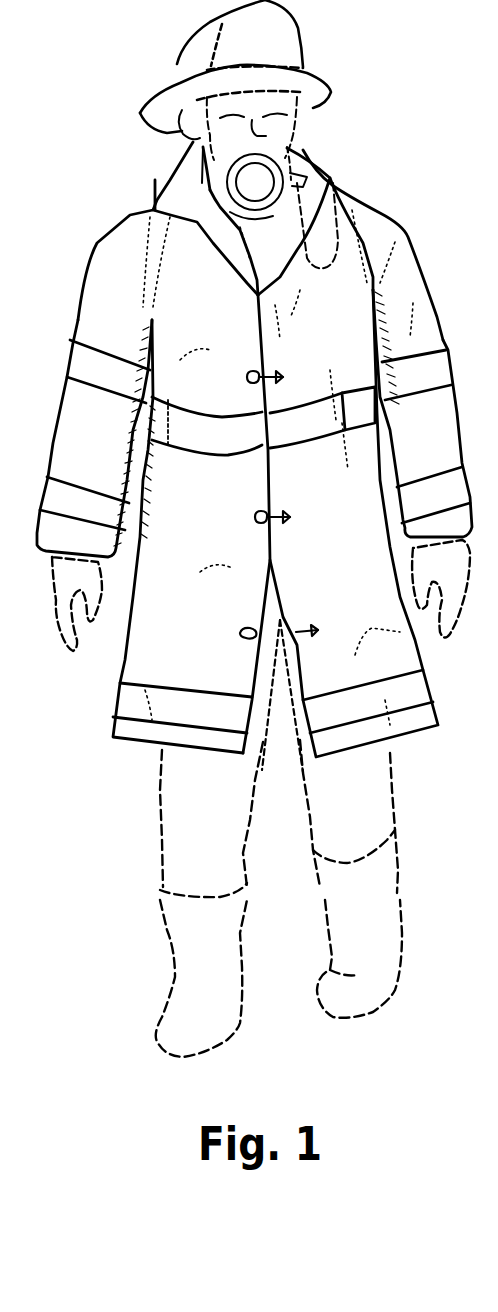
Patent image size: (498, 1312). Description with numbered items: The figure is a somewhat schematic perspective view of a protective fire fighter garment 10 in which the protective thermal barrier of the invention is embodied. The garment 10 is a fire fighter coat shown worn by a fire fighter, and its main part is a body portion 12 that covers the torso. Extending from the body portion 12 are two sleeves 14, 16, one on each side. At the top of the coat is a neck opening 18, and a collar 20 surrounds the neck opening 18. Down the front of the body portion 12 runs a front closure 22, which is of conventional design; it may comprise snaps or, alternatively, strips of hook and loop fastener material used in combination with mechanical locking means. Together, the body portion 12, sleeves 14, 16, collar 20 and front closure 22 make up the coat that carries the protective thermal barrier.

The protective fire fighter garment 10 is at (110, 212).
The body portion 12 is at (221, 528).
The sleeve 14 is at (108, 451).
The sleeve 16 is at (441, 470).
The neck opening 18 is at (170, 183).
The collar 20 is at (247, 263).
The front closure 22 is at (296, 364).